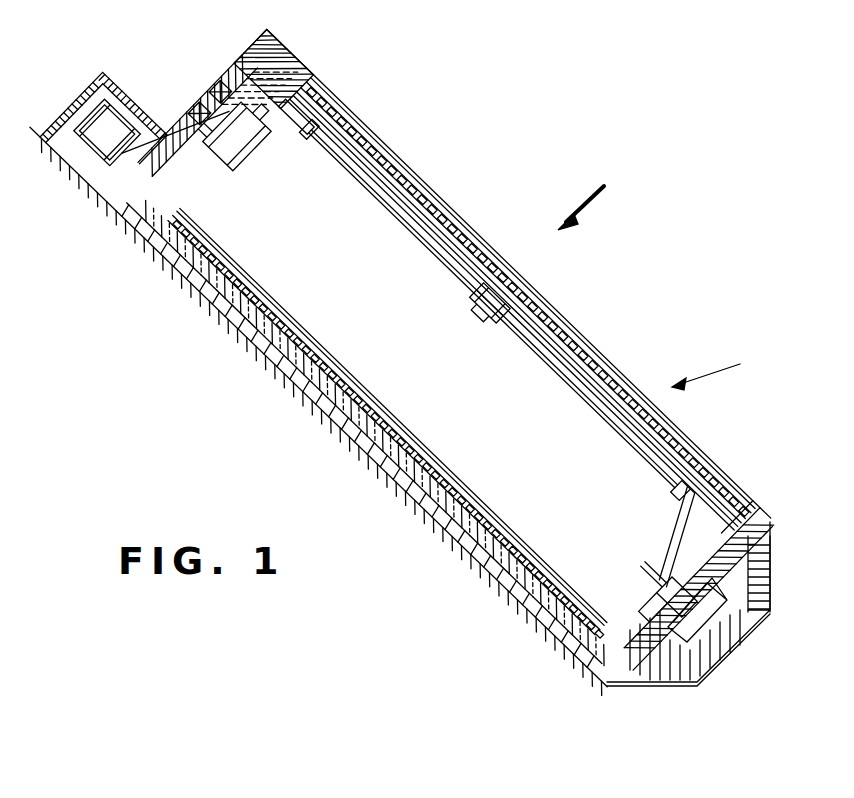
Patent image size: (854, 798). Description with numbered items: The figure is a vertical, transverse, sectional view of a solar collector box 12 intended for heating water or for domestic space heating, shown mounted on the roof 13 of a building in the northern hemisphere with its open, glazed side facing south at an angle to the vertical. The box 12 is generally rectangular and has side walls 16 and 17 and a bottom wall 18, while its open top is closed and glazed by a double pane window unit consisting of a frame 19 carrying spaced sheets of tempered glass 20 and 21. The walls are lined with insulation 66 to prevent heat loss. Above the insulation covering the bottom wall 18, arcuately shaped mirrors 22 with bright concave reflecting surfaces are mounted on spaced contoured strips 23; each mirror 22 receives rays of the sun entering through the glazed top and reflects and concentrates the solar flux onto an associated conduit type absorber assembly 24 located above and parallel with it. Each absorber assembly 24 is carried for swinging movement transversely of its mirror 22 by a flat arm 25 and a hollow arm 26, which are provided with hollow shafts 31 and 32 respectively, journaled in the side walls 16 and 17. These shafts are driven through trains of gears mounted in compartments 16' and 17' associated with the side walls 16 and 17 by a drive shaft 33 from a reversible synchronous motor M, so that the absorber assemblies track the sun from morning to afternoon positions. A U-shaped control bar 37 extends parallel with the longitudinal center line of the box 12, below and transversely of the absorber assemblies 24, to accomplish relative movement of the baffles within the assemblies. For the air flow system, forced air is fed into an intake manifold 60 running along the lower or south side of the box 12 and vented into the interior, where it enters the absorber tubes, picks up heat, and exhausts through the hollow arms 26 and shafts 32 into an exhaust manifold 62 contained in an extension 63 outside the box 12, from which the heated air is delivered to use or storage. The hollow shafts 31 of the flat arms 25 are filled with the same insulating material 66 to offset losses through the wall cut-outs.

The collector box 12 is at (716, 370).
The roof 13 is at (605, 690).
The side wall 16 is at (209, 98).
The compartment 16' is at (204, 90).
The side wall 17 is at (718, 570).
The compartment 17' is at (748, 481).
The bottom wall 18 is at (253, 343).
The frame 19 is at (290, 42).
The sheet of tempered glass 20 is at (476, 245).
The sheet of tempered glass 21 is at (576, 338).
The arcuately shaped mirror 22 is at (326, 343).
The contoured strip 23 is at (158, 245).
The absorber assembly 24 is at (420, 262).
The flat arm 25 is at (276, 136).
The hollow arm 26 is at (670, 525).
The hollow shaft 31 is at (226, 184).
The hollow shaft 32 is at (660, 580).
The drive shaft 33 is at (100, 188).
The control bar 37 is at (478, 318).
The intake manifold 60 is at (580, 650).
The exhaust manifold 62 is at (712, 625).
The extension 63 is at (770, 600).
The insulation 66 is at (156, 224).
The reversible synchronous motor M is at (90, 100).